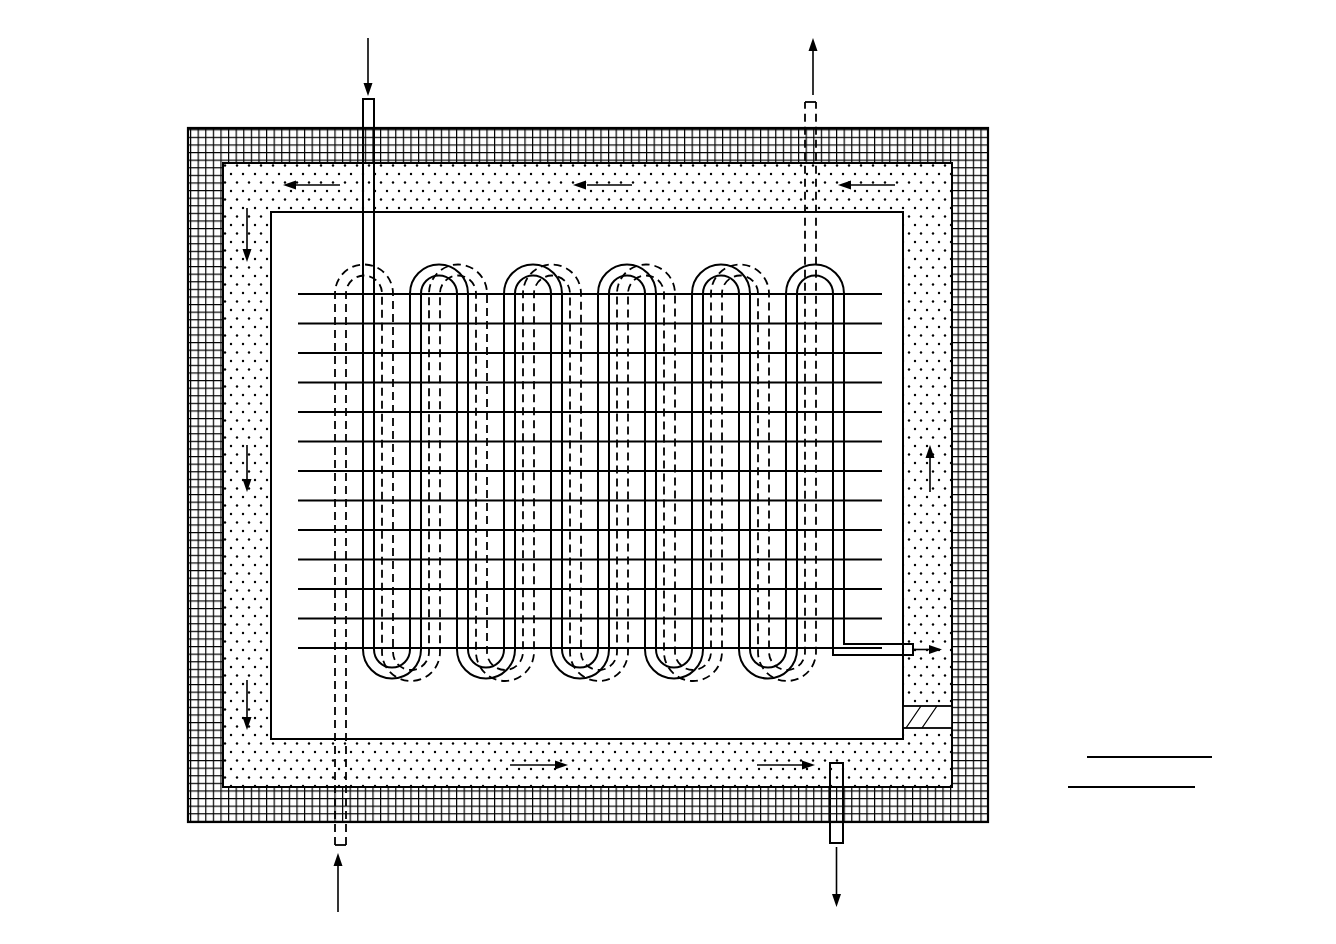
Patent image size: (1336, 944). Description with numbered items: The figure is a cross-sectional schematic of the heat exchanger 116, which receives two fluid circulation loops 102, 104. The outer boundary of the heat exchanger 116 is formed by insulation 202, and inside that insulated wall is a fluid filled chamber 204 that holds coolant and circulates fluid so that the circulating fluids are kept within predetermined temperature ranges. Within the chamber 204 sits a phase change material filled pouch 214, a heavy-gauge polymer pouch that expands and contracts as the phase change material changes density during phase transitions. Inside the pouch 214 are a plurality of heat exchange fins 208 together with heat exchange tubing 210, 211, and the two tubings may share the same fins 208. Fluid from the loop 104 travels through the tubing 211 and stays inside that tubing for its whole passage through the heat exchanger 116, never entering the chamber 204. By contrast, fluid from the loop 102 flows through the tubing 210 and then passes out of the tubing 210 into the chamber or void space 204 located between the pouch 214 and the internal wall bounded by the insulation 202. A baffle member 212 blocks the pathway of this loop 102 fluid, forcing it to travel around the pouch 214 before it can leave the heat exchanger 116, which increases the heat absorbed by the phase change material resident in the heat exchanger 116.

The heat exchanger 116 is at (1037, 86).
The fluid circulation loop 102 is at (377, 110).
The fluid circulation loop 104 is at (821, 120).
The insulation 202 is at (985, 191).
The fluid filled chamber 204 is at (935, 259).
The heat exchange fins 208 is at (868, 415).
The heat exchange tubing 210 is at (792, 633).
The heat exchange tubing 211 is at (845, 334).
The baffle member 212 is at (923, 708).
The phase change material filled pouch 214 is at (302, 691).